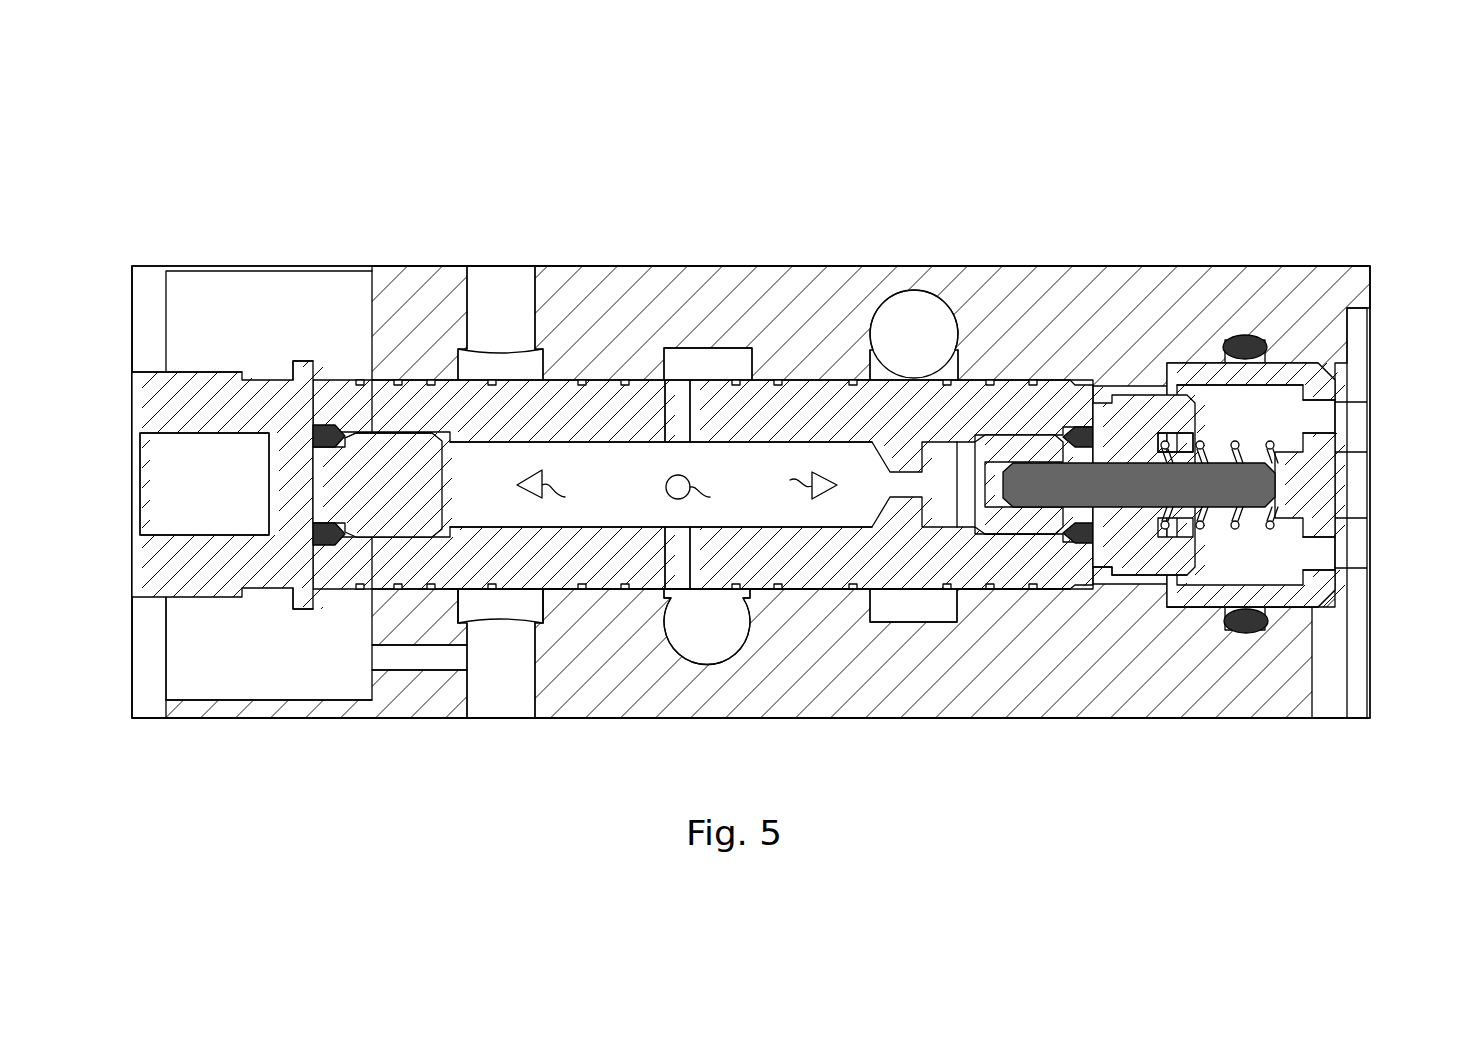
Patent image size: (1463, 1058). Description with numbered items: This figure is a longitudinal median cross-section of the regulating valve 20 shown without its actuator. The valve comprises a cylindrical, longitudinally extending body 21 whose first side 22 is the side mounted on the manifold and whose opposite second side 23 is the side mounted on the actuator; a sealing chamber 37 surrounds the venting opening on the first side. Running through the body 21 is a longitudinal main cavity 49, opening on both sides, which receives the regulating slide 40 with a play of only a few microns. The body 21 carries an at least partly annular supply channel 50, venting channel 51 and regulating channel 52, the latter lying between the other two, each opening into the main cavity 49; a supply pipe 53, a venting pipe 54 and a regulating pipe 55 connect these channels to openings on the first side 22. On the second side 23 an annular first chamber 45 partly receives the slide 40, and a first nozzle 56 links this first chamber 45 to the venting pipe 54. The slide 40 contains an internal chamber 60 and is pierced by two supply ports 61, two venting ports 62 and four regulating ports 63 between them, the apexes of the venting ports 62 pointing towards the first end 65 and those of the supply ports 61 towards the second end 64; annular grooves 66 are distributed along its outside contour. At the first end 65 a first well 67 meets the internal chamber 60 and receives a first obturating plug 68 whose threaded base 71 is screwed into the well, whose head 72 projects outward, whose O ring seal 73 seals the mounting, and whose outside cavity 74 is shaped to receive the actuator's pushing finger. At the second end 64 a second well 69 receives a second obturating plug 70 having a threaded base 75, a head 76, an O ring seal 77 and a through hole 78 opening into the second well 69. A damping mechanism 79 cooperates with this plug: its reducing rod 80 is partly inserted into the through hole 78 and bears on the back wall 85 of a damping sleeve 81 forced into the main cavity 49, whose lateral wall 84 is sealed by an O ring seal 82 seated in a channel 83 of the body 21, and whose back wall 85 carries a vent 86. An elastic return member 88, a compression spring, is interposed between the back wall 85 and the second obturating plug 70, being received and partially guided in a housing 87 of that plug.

The regulating valve 20 is at (997, 136).
The body 21 is at (1040, 705).
The first side 22 is at (1375, 289).
The second side 23 is at (132, 690).
The sealing chamber 37 is at (1366, 355).
The regulating slide 40 is at (565, 398).
The first chamber 45 is at (240, 694).
The main cavity 49 is at (650, 598).
The supply channel 50 is at (905, 605).
The venting channel 51 is at (527, 605).
The regulating channel 52 is at (690, 355).
The supply pipe 53 is at (915, 340).
The venting pipe 54 is at (500, 280).
The regulating pipe 55 is at (700, 650).
The first nozzle 56 is at (390, 655).
The internal chamber 60 is at (609, 476).
The supply ports 61 is at (797, 484).
The venting ports 62 is at (557, 490).
The regulating ports 63 is at (702, 493).
The second end 64 is at (1078, 428).
The first end 65 is at (313, 423).
The annular grooves 66 is at (430, 383).
The first well 67 is at (410, 434).
The first obturating plug 68 is at (195, 390).
The second well 69 is at (985, 544).
The second obturating plug 70 is at (1150, 378).
The threaded base 71 is at (367, 496).
The head 72 is at (184, 578).
The O ring seal 73 is at (313, 543).
The outside cavity 74 is at (190, 491).
The threaded base 75 is at (1010, 452).
The head 76 is at (1135, 567).
The O ring seal 77 is at (1085, 620).
The through hole 78 is at (992, 480).
The damping mechanism 79 is at (1290, 358).
The reducing rod 80 is at (1240, 450).
The damping sleeve 81 is at (1290, 608).
The O ring seal 82 is at (1236, 634).
The channel 83 is at (1226, 340).
The lateral wall 84 is at (1245, 377).
The back wall 85 is at (1310, 485).
The vent 86 is at (1322, 428).
The housing 87 is at (1172, 434).
The elastic return member 88 is at (1307, 558).